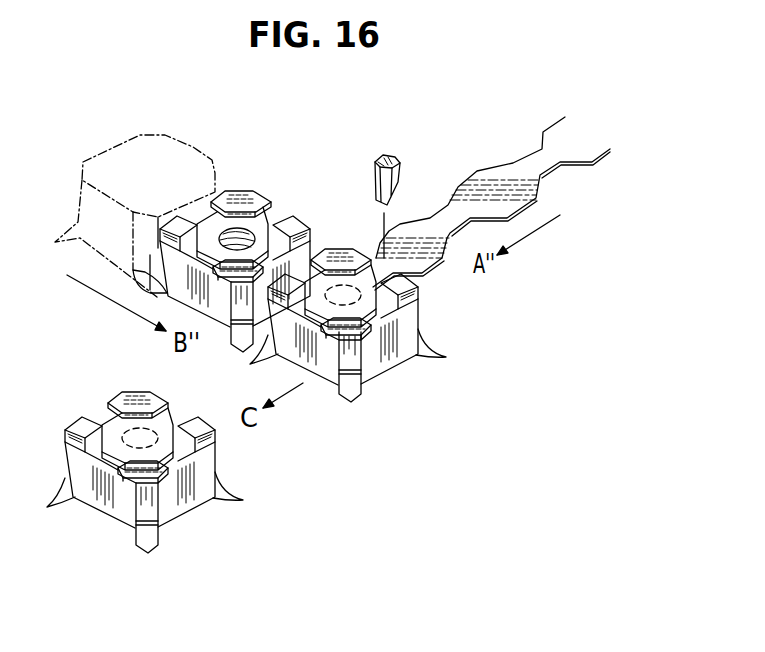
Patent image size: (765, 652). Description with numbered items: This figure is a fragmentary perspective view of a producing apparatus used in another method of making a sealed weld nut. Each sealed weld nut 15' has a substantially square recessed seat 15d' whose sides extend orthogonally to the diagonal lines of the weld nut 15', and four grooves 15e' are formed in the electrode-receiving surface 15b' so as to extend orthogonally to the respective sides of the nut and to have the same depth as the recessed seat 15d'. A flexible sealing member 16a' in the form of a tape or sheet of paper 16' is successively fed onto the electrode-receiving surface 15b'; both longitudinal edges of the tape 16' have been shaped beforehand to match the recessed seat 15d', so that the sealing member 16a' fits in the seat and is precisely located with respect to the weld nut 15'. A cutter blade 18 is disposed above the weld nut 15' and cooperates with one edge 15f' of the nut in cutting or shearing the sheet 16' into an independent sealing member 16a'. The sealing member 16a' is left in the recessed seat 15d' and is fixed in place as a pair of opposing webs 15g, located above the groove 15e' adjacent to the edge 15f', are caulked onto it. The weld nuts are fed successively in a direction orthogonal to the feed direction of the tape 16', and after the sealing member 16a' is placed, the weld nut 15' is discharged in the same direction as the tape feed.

The sealed weld nut 15' is at (246, 347).
The recessed seat 15d' is at (244, 192).
The electrode-receiving surface 15b' is at (305, 214).
The groove 15e' is at (172, 274).
The edge of the weld nut 15f' is at (347, 235).
The opposing webs 15g is at (173, 420).
The tape 16' is at (491, 202).
The sealing member 16a' is at (85, 406).
The cutter blade 18 is at (398, 168).